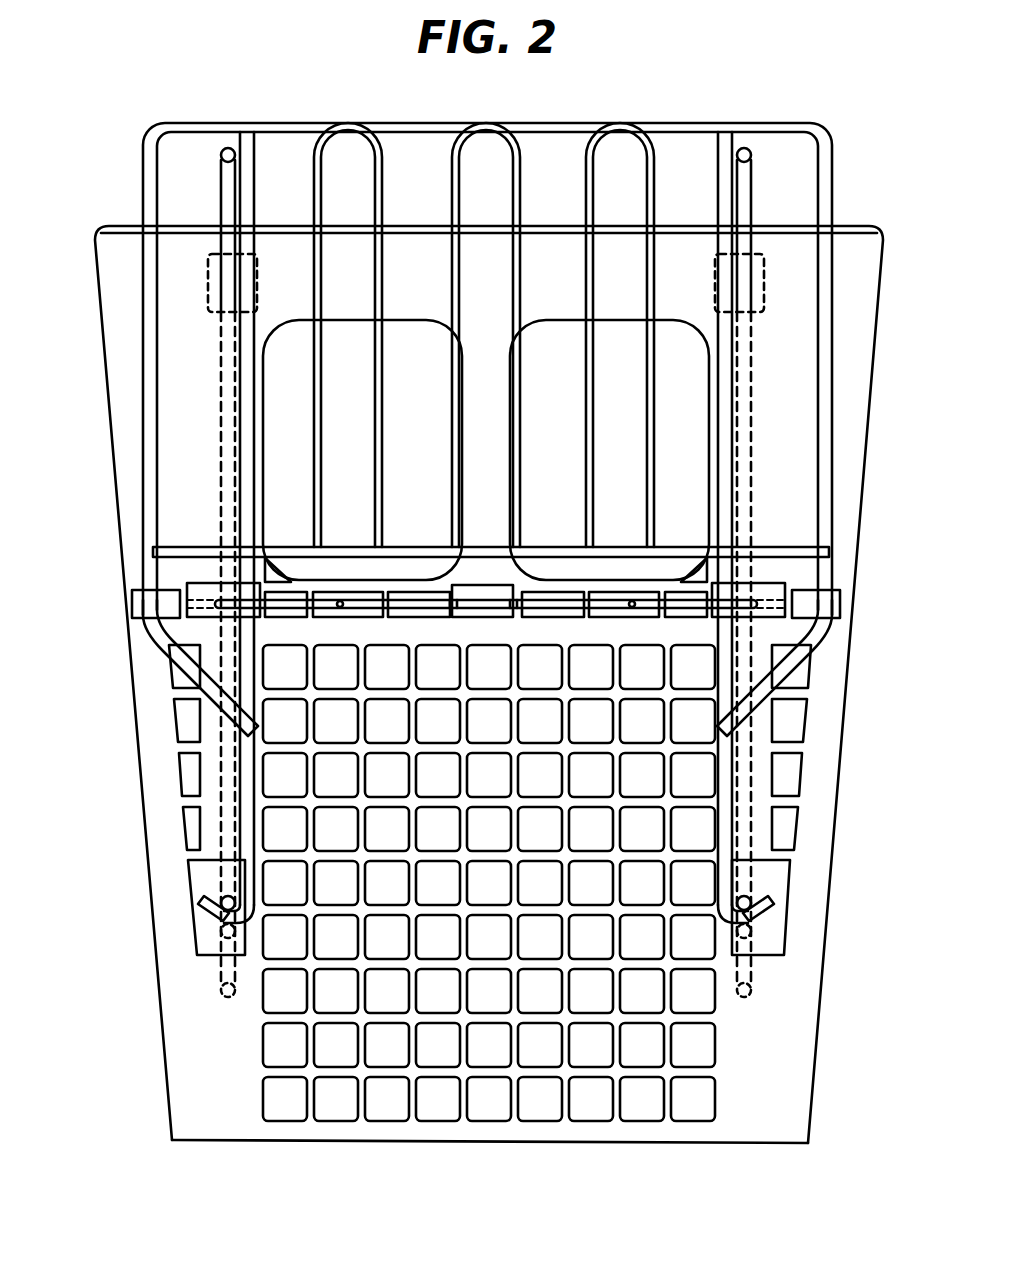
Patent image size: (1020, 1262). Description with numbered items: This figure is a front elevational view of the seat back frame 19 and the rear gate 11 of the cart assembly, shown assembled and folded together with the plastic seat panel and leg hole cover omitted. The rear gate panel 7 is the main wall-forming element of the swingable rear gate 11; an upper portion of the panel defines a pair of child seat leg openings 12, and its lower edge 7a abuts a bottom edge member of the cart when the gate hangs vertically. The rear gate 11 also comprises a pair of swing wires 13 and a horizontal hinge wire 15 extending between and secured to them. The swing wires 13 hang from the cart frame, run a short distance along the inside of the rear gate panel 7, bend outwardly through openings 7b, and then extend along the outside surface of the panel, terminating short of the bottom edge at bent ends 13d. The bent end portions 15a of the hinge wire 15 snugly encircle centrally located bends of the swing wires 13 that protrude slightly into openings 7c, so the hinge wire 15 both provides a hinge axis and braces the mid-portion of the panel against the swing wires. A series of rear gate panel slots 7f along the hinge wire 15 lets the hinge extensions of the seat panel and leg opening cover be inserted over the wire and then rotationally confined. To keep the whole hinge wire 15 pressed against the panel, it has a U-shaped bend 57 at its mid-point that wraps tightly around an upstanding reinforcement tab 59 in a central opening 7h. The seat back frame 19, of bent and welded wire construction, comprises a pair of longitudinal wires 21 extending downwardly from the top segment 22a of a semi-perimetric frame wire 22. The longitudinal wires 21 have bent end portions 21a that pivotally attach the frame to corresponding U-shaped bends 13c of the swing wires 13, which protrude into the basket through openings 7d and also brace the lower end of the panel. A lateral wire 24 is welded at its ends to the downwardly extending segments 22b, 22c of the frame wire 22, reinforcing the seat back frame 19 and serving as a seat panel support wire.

The semi-perimetric frame wire 22 is at (553, 123).
The top segment of semi-perimetric frame wire 22a is at (484, 335).
The downwardly extending segment of semi-perimetric wire 22b is at (143, 396).
The downwardly extending segment of semi-perimetric wire 22c is at (832, 452).
The seat back frame 19 is at (832, 377).
The swing wires 13 is at (219, 200).
The U-shaped bends of swing wires 13c is at (228, 938).
The bent ends of swing wires 13d is at (228, 998).
The rear gate panel 7 is at (496, 303).
The lower edge of rear gate panel 7a is at (282, 1143).
The openings in rear gate panel 7b is at (208, 290).
The openings in rear gate panel 7c is at (190, 616).
The openings in rear gate panel 7d is at (188, 872).
The rear gate panel slots 7f is at (345, 613).
The central opening of rear gate panel 7h is at (511, 587).
The child seat leg openings 12 is at (375, 429).
The lateral wire 24 is at (183, 547).
The hinge wire 15 is at (536, 603).
The bent end portions of hinge wire 15a is at (213, 603).
The U-shaped bend of hinge wire 57 is at (496, 595).
The reinforcement tab 59 is at (482, 597).
The longitudinal wires 21 is at (240, 787).
The bent end portions of longitudinal wires 21a is at (222, 928).
The rear gate 11 is at (161, 979).